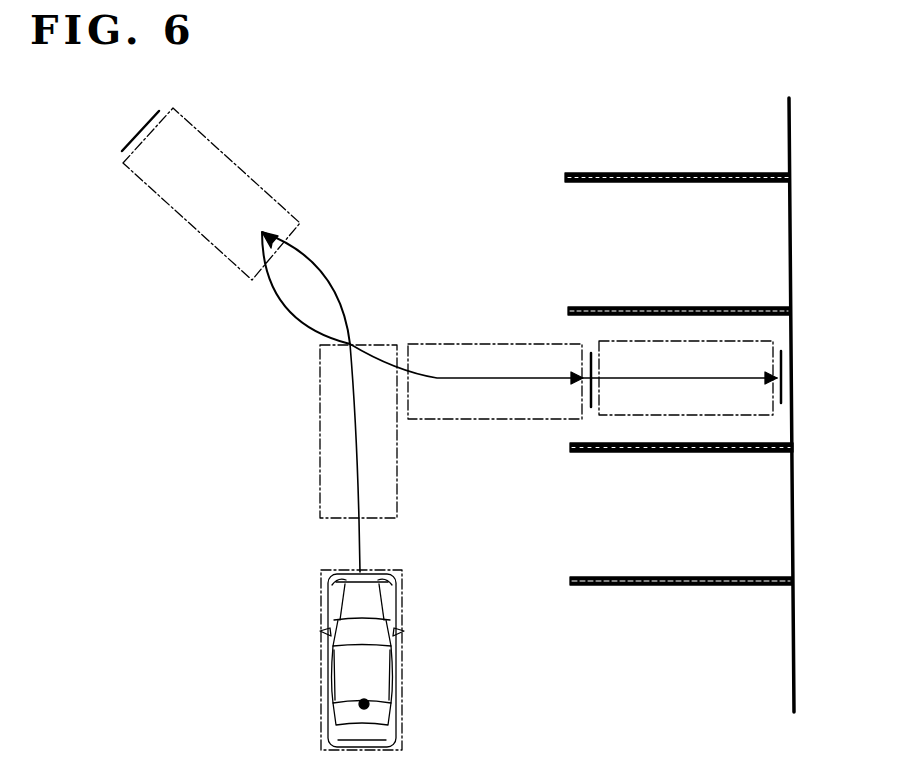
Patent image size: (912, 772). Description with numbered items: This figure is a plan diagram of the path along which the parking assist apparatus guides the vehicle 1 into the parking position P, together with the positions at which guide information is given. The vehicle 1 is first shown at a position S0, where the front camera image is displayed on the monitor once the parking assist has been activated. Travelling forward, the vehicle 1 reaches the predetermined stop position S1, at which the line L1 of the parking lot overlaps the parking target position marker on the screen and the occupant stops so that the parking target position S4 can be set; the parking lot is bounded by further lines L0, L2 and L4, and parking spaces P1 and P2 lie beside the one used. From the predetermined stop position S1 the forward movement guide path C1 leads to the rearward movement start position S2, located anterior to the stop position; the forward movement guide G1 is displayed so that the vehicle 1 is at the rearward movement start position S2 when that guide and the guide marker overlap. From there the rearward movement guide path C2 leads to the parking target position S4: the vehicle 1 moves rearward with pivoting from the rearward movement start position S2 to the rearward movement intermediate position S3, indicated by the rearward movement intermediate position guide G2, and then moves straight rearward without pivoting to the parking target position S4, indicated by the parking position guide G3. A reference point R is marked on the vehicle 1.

The vehicle 1 is at (400, 668).
The reference point of vehicle R is at (366, 706).
The position S0 is at (320, 695).
The predetermined stop position S1 is at (320, 458).
The rearward movement start position S2 is at (248, 174).
The rearward movement intermediate position S3 is at (480, 343).
The parking target position S4 is at (780, 404).
The forward movement guide G1 is at (152, 117).
The rearward movement intermediate position guide G2 is at (593, 388).
The parking position guide G3 is at (781, 367).
The forward movement guide path C1 is at (362, 540).
The rearward movement guide path C2 is at (293, 300).
The parking position P is at (667, 356).
The first parking space P1 is at (748, 242).
The second parking space P2 is at (753, 527).
The parking line L0 is at (675, 172).
The line of a parking lot L1 is at (705, 306).
The parking line L2 is at (675, 453).
The parking line L4 is at (712, 577).